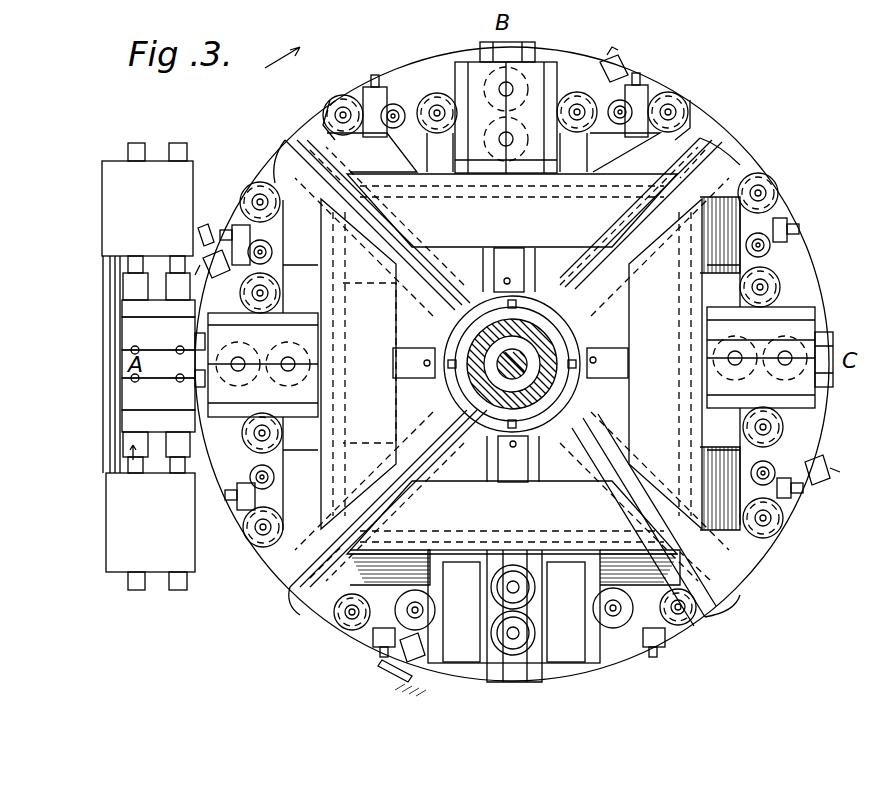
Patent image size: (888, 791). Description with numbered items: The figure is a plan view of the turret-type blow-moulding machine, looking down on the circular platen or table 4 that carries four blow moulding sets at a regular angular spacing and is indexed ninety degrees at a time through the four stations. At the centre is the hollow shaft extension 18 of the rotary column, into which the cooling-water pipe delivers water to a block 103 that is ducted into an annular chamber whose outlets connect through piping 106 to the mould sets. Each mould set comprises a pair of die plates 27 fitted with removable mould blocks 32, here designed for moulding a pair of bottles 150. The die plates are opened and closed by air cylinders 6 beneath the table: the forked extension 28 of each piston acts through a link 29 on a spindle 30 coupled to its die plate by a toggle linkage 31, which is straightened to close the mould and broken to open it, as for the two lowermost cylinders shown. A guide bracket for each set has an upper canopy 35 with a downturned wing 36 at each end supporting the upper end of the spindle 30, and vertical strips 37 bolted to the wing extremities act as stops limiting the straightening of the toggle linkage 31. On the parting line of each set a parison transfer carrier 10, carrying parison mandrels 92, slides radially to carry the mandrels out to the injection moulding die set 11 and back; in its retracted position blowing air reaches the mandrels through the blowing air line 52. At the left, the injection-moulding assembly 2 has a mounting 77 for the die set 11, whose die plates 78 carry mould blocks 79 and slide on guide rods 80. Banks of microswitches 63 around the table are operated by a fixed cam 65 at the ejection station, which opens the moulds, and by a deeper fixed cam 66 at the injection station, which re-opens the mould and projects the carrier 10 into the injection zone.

The injection-moulding assembly 2 is at (178, 200).
The circular platen or table 4 is at (447, 60).
The air cylinders 6 is at (415, 200).
The parison transfer carriers 10 is at (488, 272).
The injection moulding die set 11 is at (133, 462).
The shaft extension 18 is at (525, 345).
The die plates 27 is at (800, 305).
The forked extension of the piston 28 is at (318, 135).
The link 29 is at (285, 178).
The spindle 30 is at (255, 545).
The toggle linkage 31 is at (600, 105).
The mould blocks 32 is at (478, 190).
The upper canopy 35 is at (511, 364).
The downturned wing 36 is at (672, 98).
The vertical strips 37 is at (375, 78).
The blowing air line 52 is at (427, 366).
The microswitch 63 is at (628, 62).
The fixed cam 65 is at (385, 675).
The fixed cam 66 is at (218, 216).
The mounting 77 is at (108, 256).
The die plates 78 is at (160, 285).
The mould blocks 79 is at (158, 366).
The guide rods 80 is at (178, 143).
The parison mandrel 92 is at (530, 582).
The block 103 is at (520, 360).
The piping 106 is at (520, 420).
The bottles 150 is at (535, 628).